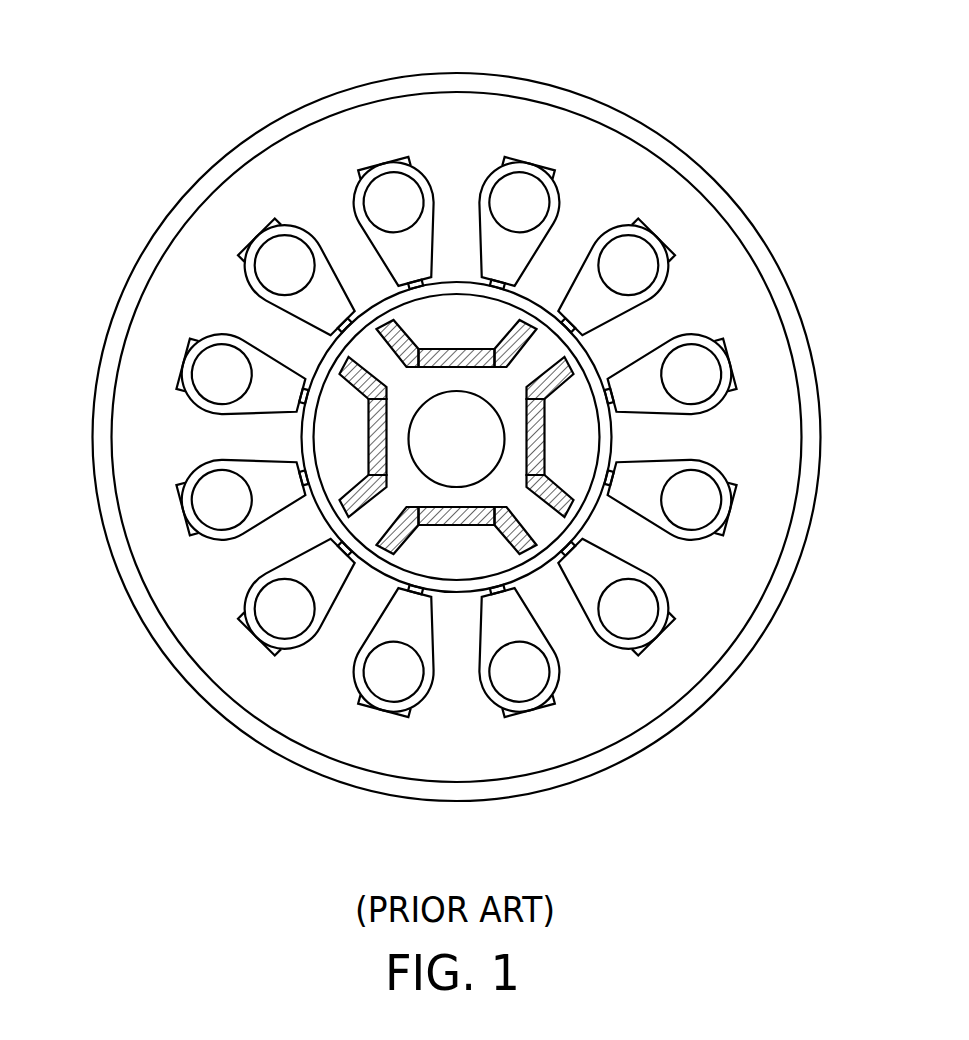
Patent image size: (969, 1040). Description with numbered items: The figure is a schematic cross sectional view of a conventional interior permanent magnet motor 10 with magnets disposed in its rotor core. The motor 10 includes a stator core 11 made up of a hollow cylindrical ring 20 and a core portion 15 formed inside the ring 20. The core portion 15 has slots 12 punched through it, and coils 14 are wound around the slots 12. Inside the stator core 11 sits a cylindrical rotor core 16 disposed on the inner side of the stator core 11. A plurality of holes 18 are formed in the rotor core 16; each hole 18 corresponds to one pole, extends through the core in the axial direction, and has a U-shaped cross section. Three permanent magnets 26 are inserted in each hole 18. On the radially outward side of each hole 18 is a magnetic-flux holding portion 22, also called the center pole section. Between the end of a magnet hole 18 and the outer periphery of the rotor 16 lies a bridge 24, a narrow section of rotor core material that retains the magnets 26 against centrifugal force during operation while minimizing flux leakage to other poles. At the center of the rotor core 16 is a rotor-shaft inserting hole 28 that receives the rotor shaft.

The IPM motor 10 is at (144, 44).
The stator core 11 is at (687, 146).
The slots 12 is at (542, 168).
The coils 14 is at (512, 192).
The core portion 15 is at (712, 235).
The rotor core 16 is at (458, 287).
The holes 18 is at (383, 320).
The hollow cylindrical ring 20 is at (773, 278).
The magnetic-flux holding portion 22 is at (343, 409).
The bridge 24 is at (348, 504).
The permanent magnets 26 is at (410, 533).
The rotor-shaft inserting hole 28 is at (480, 440).